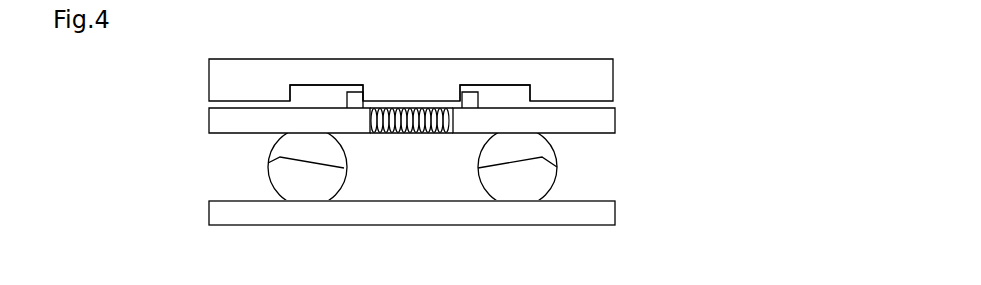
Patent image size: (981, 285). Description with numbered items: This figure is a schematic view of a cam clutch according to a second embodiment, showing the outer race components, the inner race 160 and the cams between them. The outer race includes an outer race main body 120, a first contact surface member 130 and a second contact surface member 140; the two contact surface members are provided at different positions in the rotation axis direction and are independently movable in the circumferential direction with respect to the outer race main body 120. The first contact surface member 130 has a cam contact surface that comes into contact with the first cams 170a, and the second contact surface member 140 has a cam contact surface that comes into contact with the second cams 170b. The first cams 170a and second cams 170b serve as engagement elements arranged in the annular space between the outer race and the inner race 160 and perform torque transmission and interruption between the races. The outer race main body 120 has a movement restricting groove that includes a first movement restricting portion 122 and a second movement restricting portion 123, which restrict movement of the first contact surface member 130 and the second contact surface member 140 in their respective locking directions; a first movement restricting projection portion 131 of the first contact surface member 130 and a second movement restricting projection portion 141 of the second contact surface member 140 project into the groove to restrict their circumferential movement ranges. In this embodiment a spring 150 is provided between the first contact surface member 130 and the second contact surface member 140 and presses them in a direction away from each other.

The outer race main body 120 is at (255, 70).
The first movement restricting portion 122 is at (350, 86).
The second movement restricting portion 123 is at (473, 95).
The first contact surface member 130 is at (230, 122).
The first movement restricting projection portion 131 is at (352, 93).
The second contact surface member 140 is at (598, 121).
The second movement restricting projection portion 141 is at (467, 92).
The spring 150 is at (413, 133).
The inner race 160 is at (223, 212).
The first cam 170a is at (305, 178).
The second cam 170b is at (517, 175).